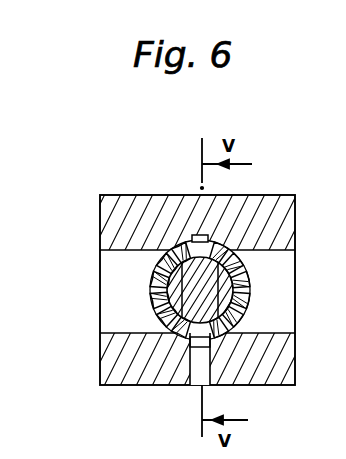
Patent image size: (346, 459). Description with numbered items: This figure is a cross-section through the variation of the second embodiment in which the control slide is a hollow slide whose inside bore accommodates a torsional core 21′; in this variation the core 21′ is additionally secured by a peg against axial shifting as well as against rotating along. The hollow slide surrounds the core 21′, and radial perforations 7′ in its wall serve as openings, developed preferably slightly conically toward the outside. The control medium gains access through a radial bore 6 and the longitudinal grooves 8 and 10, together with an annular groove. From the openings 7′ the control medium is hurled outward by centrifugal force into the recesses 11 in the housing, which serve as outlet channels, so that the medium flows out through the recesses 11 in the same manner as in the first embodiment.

The radial bore 6 is at (205, 369).
The radial perforations 7′ is at (237, 290).
The longitudinal groove 8 is at (191, 343).
The longitudinal groove 10 is at (190, 236).
The recesses 11 is at (106, 314).
The core 21′ is at (187, 290).